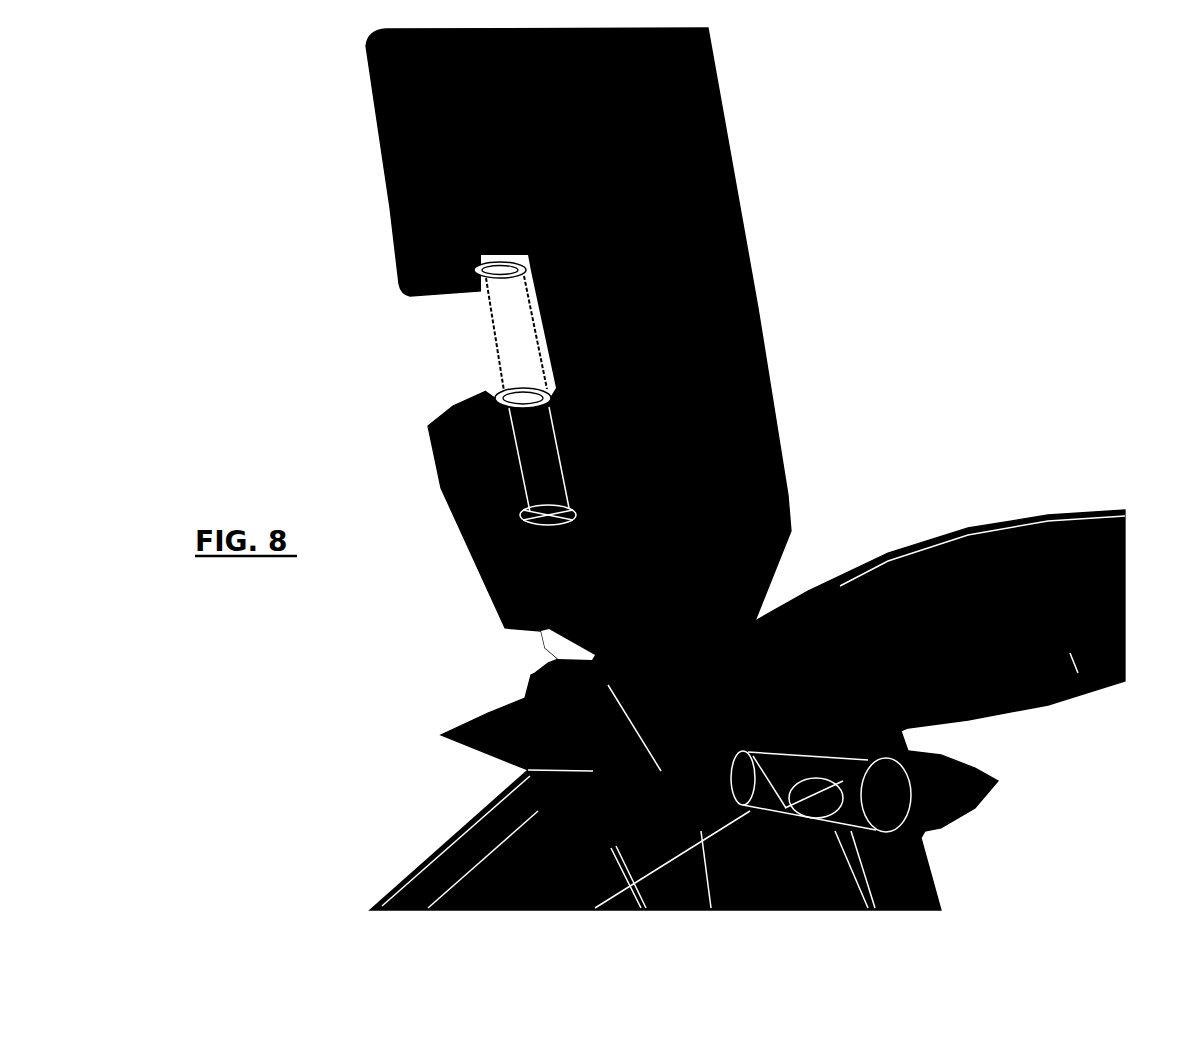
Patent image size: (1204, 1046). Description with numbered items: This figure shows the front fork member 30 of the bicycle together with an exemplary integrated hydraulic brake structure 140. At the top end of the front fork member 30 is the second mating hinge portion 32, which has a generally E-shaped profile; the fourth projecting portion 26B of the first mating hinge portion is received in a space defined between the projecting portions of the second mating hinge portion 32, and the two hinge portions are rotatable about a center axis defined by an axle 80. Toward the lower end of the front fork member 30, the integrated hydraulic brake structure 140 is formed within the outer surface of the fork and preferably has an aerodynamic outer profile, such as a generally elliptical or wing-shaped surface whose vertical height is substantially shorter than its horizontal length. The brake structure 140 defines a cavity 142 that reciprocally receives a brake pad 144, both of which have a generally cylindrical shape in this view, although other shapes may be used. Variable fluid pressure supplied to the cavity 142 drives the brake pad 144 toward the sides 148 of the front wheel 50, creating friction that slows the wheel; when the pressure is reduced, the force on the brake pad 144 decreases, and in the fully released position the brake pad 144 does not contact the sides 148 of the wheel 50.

The fourth projecting portion 26B is at (404, 295).
The second mating hinge portion 32 is at (732, 258).
The axle 80 is at (480, 333).
The front wheel 50 is at (950, 530).
The sides of the wheel 148 is at (1063, 653).
The brake pad 144 is at (880, 757).
The cavity 142 is at (907, 787).
The integrated hydraulic brake structure 140 is at (983, 770).
The front fork member 30 is at (917, 883).